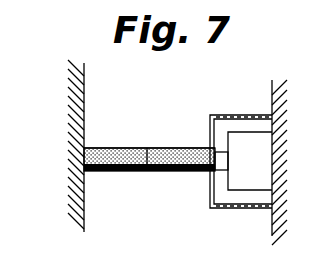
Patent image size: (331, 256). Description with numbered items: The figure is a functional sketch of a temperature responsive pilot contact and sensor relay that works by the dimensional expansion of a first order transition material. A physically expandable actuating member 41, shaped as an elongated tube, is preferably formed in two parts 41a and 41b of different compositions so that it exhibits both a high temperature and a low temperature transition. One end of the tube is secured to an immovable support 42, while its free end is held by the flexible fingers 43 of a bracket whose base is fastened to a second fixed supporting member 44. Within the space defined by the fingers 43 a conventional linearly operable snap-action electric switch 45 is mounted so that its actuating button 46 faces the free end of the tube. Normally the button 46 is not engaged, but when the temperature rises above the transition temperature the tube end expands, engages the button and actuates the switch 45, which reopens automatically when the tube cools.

The actuating member 41 is at (124, 149).
The first part of tube 41a is at (122, 173).
The second part of tube 41b is at (178, 173).
The support 42 is at (81, 98).
The flexible fingers 43 is at (211, 128).
The second fixed supporting member 44 is at (272, 84).
The snap-action electric switch 45 is at (251, 182).
The actuating button 46 is at (226, 151).